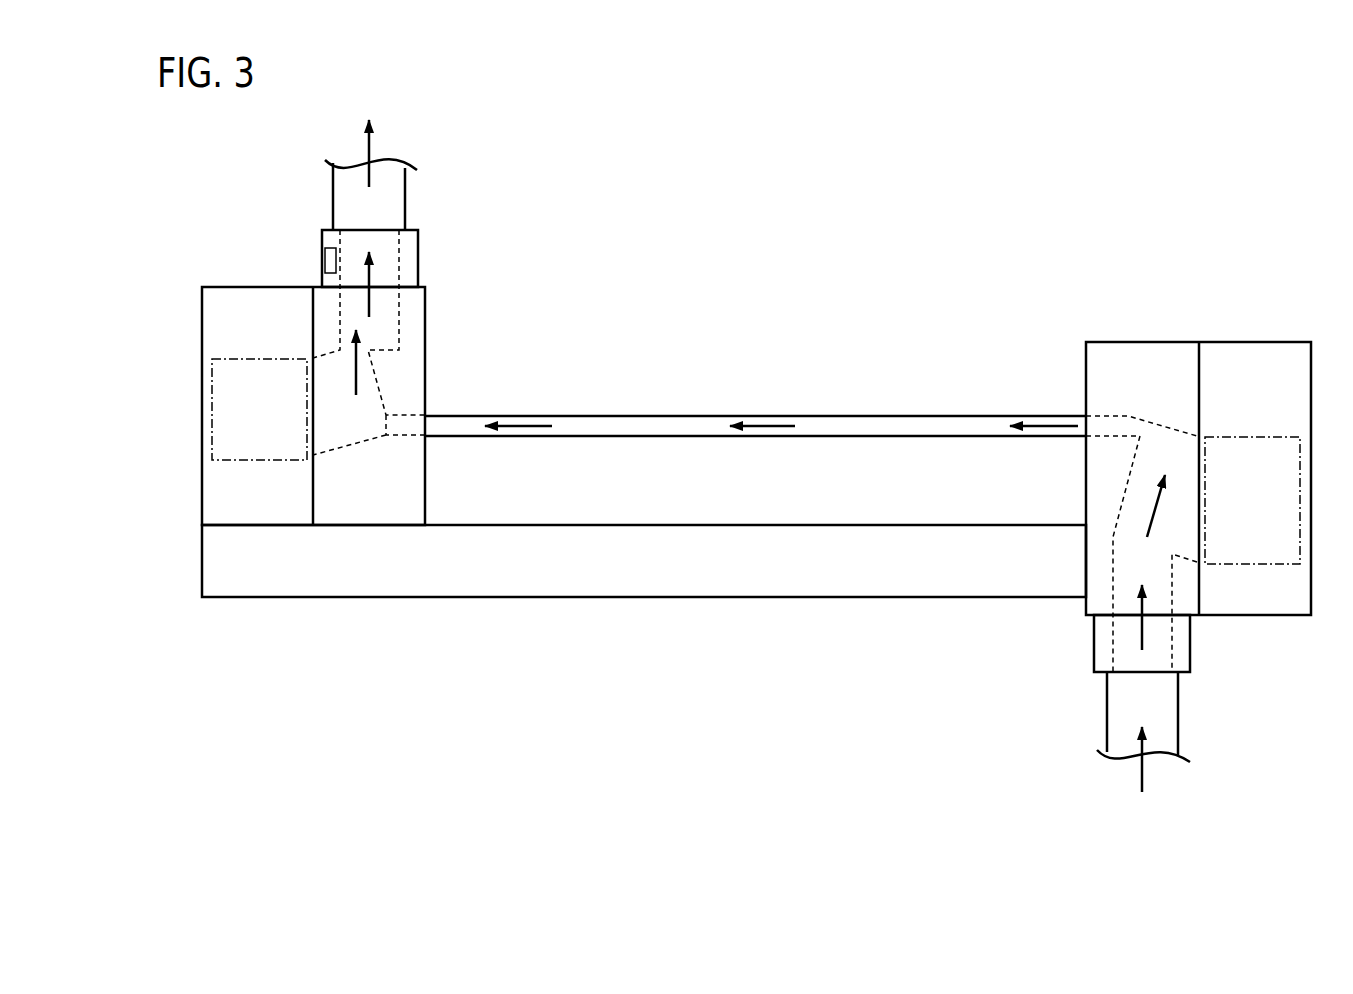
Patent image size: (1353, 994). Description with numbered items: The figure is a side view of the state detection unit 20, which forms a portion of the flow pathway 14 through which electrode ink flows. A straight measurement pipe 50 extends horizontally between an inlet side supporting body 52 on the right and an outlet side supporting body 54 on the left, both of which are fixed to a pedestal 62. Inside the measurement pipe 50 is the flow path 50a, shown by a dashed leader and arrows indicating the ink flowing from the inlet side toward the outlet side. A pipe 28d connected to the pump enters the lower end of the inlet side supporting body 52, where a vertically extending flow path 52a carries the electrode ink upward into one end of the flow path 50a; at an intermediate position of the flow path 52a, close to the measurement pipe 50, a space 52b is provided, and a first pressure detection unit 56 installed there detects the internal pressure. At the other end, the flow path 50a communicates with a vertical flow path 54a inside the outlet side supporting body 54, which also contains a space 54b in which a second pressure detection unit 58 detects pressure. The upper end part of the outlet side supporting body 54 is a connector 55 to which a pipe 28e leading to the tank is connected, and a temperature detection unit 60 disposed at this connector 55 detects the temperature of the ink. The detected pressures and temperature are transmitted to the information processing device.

The state detection unit 20 is at (737, 126).
The flow pathway 14 is at (755, 361).
The pipe 28d is at (1178, 717).
The pipe 28e is at (405, 199).
The measurement pipe 50 is at (697, 413).
The flow path 50a is at (862, 430).
The inlet side supporting body 52 is at (1159, 465).
The flow path 52a is at (1133, 569).
The space 52b is at (1142, 495).
The outlet side supporting body 54 is at (336, 364).
The flow path 54a is at (383, 322).
The space 54b is at (367, 383).
The connector 55 is at (372, 260).
The first pressure detection unit 56 is at (1238, 436).
The second pressure detection unit 58 is at (228, 358).
The temperature detection unit 60 is at (331, 249).
The pedestal 62 is at (721, 583).